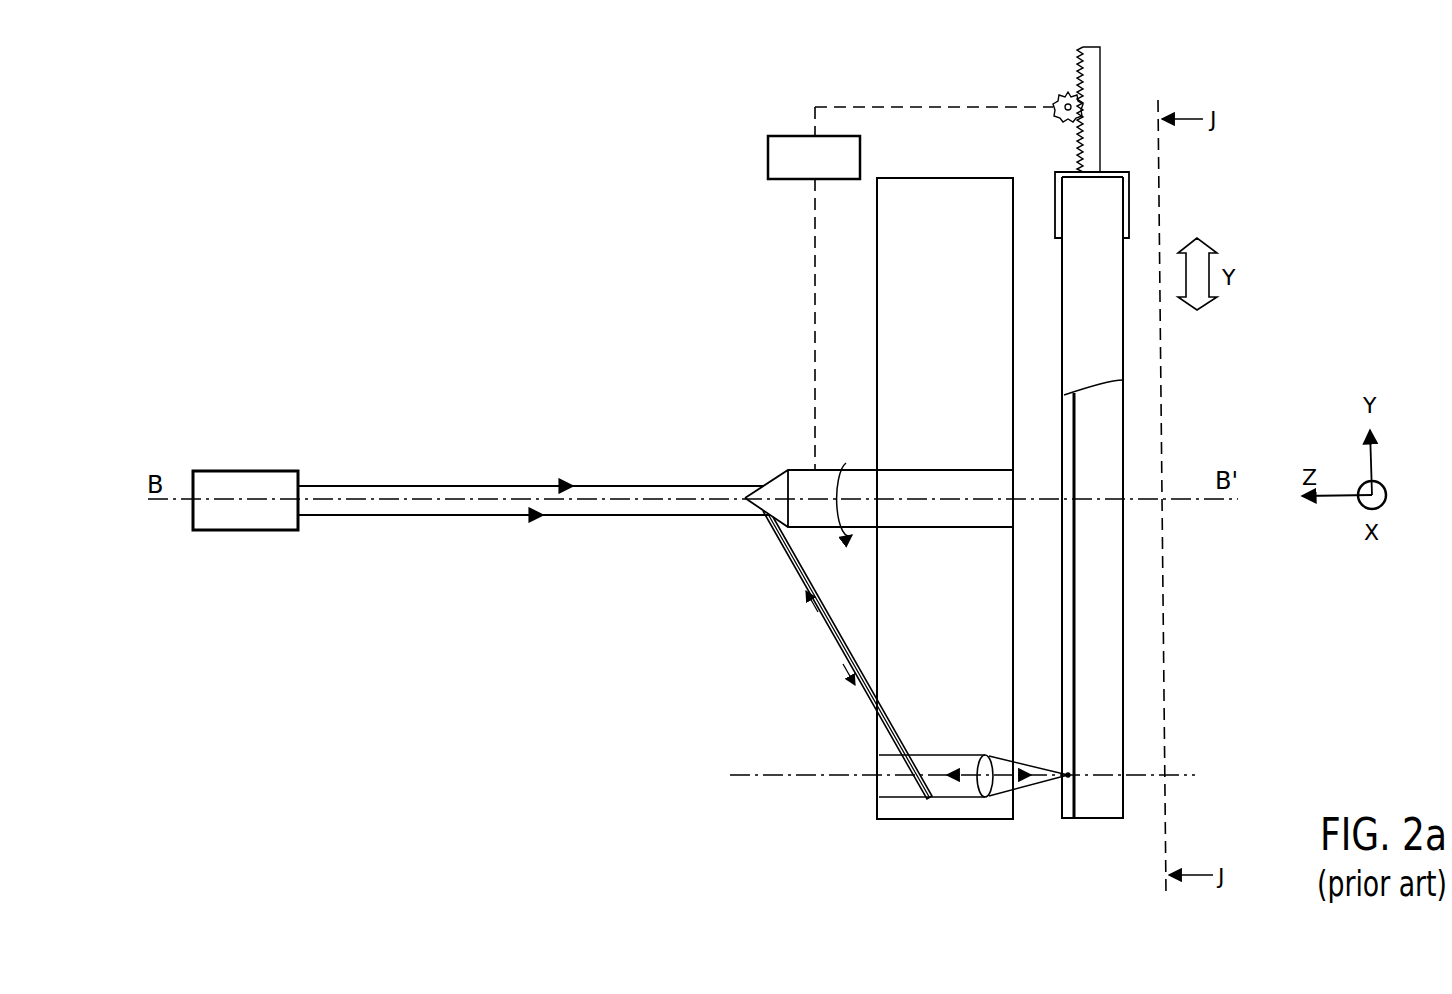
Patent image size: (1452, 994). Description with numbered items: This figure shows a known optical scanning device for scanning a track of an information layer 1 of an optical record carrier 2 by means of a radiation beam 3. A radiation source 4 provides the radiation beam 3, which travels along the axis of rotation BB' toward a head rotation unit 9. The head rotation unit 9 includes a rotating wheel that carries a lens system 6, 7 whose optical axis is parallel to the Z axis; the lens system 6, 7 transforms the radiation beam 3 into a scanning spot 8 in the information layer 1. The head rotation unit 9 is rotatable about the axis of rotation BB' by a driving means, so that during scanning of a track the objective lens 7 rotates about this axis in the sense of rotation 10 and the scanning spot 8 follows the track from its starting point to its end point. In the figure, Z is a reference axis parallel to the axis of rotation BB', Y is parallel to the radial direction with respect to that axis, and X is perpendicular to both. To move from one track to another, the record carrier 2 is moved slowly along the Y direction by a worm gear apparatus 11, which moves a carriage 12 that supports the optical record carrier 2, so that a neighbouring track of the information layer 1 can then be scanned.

The information layer 1 is at (1078, 682).
The optical record carrier 2 is at (1106, 858).
The radiation beam 3 is at (362, 485).
The radiation source 4 is at (243, 471).
The lens system 6 is at (878, 764).
The objective lens 7 is at (984, 800).
The scanning spot 8 is at (1068, 778).
The head rotation unit 9 is at (900, 820).
The sense of rotation 10 is at (846, 463).
The worm gear apparatus 11 is at (816, 97).
The carriage 12 is at (1129, 194).